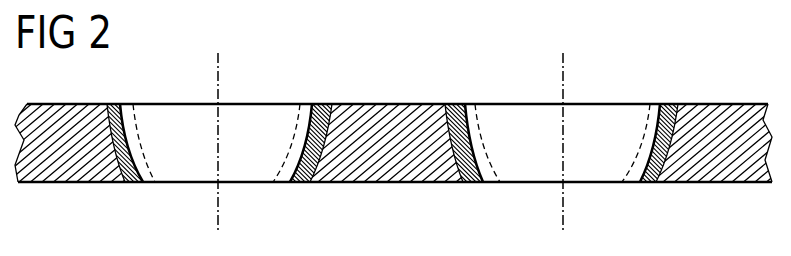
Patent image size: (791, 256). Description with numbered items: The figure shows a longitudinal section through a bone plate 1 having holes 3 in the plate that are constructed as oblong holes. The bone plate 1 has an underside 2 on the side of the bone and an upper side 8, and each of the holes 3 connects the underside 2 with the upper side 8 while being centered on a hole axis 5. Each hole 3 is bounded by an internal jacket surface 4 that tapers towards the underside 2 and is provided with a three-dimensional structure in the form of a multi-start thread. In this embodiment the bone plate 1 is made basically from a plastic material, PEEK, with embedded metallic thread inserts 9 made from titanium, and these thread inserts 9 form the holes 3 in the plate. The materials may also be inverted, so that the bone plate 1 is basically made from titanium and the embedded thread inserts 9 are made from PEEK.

The bone plate 1 is at (423, 88).
The underside 2 is at (392, 170).
The holes in the plate 3 is at (250, 112).
The internal jacket surface 4 is at (145, 135).
The hole axis 5 is at (218, 215).
The upper side 8 is at (380, 104).
The thread inserts 9 is at (320, 104).